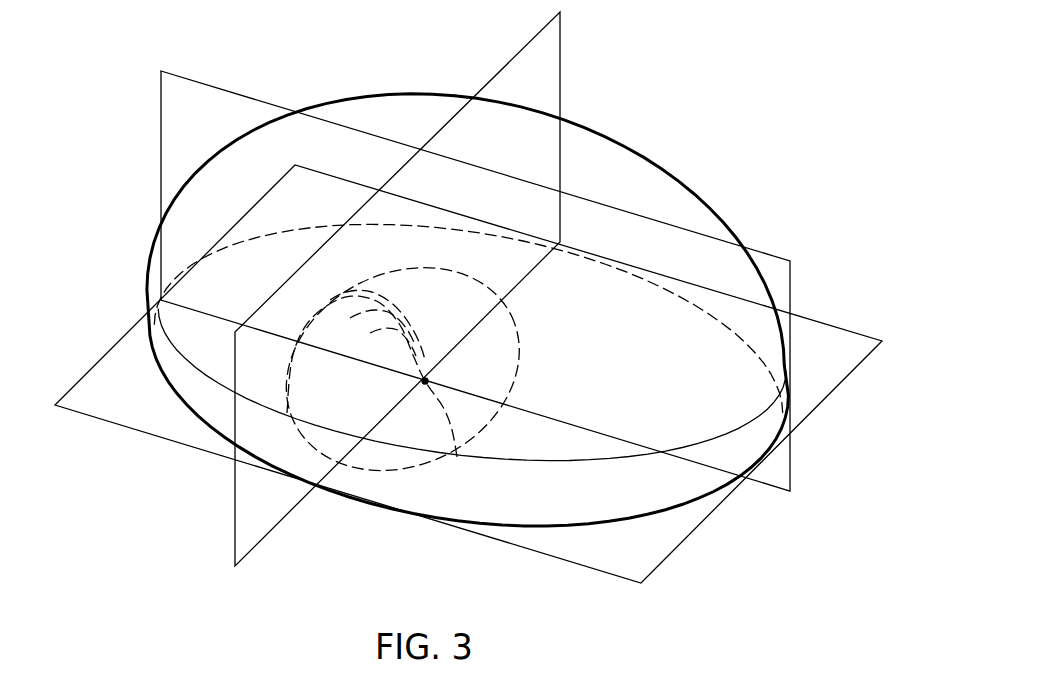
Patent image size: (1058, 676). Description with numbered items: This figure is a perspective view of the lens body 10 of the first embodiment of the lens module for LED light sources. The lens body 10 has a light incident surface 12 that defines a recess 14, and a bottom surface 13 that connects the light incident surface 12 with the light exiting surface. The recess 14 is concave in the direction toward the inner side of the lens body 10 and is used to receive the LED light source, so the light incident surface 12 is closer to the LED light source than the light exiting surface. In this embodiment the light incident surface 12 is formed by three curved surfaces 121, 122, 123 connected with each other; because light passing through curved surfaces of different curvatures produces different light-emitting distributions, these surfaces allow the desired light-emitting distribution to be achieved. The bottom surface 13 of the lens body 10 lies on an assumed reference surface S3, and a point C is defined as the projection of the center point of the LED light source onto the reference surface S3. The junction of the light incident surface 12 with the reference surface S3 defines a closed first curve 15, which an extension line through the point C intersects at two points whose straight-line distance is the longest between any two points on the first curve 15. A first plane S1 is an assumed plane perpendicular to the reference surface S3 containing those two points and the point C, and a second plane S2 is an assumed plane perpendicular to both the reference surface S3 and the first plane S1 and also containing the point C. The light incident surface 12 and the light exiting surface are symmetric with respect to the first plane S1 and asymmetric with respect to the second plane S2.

The lens body 10 is at (688, 188).
The light incident surface 12 is at (227, 406).
The curved surface 121 is at (372, 330).
The curved surface 122 is at (352, 316).
The curved surface 123 is at (335, 297).
The bottom surface 13 is at (553, 527).
The recess 14 is at (405, 422).
The first curve 15 is at (513, 383).
The point C is at (424, 396).
The first plane S1 is at (543, 80).
The second plane S2 is at (771, 270).
The reference surface S3 is at (655, 549).